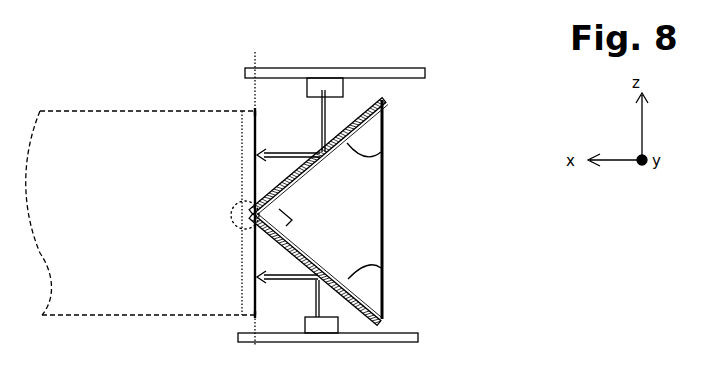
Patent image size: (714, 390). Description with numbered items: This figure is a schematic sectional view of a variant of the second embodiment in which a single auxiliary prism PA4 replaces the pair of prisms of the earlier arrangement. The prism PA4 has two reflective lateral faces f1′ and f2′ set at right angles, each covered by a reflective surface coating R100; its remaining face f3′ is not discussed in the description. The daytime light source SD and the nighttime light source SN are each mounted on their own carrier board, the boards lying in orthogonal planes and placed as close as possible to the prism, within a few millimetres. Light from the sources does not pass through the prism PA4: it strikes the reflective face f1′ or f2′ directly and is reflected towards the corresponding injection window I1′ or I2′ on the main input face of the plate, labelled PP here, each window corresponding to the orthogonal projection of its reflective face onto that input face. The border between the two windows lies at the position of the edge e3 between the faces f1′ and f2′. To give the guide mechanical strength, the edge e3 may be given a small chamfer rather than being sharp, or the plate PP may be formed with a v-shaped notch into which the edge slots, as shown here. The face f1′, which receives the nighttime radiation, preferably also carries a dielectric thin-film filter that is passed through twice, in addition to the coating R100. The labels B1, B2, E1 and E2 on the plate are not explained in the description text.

The optical part PP is at (62, 108).
The upper face B2 is at (141, 97).
The lower face B1 is at (146, 337).
The upper edge E2 is at (253, 110).
The lower edge E1 is at (253, 317).
The injection window I2′ is at (262, 162).
The injection window I1′ is at (261, 264).
The edge e3 is at (233, 215).
The daytime light source SD is at (335, 93).
The nighttime light source SN is at (328, 325).
The auxiliary prism PA4 is at (362, 206).
The reflective face f2′ is at (384, 101).
The reflective face f1′ is at (388, 319).
The rear facet f3′ is at (383, 210).
The reflective surface coating R100 is at (405, 167).